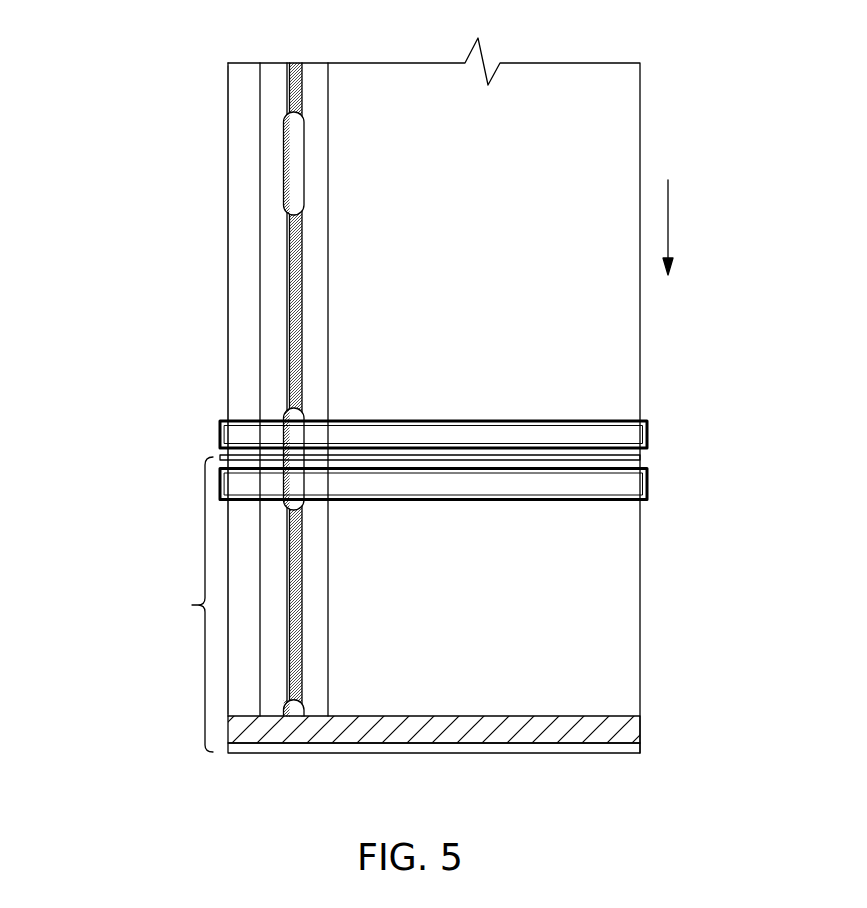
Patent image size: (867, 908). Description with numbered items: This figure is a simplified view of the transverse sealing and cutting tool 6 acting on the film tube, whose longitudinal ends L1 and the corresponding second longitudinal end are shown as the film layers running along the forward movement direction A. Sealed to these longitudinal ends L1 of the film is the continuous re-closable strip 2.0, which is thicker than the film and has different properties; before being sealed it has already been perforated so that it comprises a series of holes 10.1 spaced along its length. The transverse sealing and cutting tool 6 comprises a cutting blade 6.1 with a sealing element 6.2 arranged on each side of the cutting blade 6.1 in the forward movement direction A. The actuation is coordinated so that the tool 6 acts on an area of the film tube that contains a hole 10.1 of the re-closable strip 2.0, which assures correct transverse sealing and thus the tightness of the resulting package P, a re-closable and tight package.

The hole 10.1 is at (295, 152).
The longitudinal end of the film L1 is at (270, 285).
The re-closable strip 2.0 is at (296, 247).
The transverse sealing and cutting tool 6 is at (496, 499).
The cutting blade 6.1 is at (565, 460).
The sealing element 6.2 is at (603, 435).
The package P is at (180, 604).
The forward movement direction A is at (688, 227).